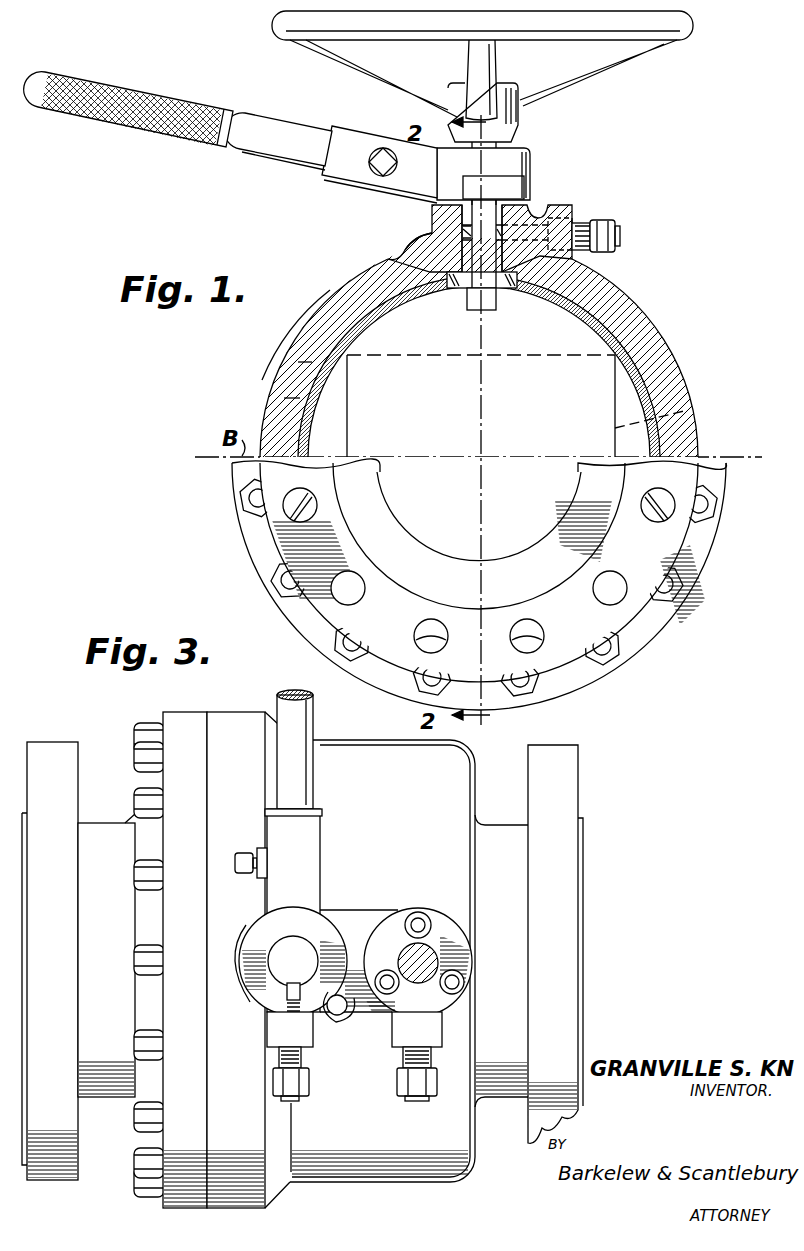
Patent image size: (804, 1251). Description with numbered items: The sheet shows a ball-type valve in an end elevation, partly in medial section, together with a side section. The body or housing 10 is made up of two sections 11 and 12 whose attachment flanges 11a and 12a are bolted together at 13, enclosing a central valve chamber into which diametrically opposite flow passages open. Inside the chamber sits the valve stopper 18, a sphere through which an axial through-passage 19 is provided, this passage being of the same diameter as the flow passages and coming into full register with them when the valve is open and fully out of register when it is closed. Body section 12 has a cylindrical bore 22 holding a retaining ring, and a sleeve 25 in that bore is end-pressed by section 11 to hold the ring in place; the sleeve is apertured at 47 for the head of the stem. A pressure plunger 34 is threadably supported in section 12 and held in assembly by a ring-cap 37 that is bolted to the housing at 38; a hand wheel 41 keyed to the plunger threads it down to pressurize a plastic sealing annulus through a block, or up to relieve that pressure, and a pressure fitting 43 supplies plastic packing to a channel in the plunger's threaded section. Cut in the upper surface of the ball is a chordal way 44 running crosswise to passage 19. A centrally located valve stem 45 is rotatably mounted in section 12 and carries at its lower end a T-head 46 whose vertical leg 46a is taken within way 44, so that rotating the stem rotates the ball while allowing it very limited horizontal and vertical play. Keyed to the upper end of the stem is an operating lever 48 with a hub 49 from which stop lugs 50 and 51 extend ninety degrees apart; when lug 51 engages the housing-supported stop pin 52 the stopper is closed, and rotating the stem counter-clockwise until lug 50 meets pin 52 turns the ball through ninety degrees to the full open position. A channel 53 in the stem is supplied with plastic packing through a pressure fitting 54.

In FIG. 1, the body or housing 10 is at (477, 347).
In FIG. 3, the body or housing 10 is at (319, 946).
In FIG. 3, the section 11 is at (126, 823).
In FIG. 1, the attachment flange 11a is at (481, 583).
In FIG. 3, the attachment flange 11a is at (79, 742).
In FIG. 1, the section 12 is at (323, 321).
In FIG. 3, the section 12 is at (433, 1184).
In FIG. 3, the attachment flange 12a is at (572, 749).
In FIG. 1, the bolts 13 is at (683, 597).
In FIG. 3, the bolts 13 is at (161, 723).
In FIG. 1, the valve stopper 18 is at (608, 337).
In FIG. 1, the axial through-passage 19 is at (685, 412).
In FIG. 1, the cylindrical bore 22 is at (283, 398).
In FIG. 1, the sleeve 25 is at (299, 362).
In FIG. 3, the pressure plunger 34 is at (423, 945).
In FIG. 3, the ring-cap 37 is at (418, 935).
In FIG. 3, the bolts 38 is at (418, 912).
In FIG. 1, the hand wheel 41 is at (694, 27).
In FIG. 3, the pressure fitting 43 is at (401, 1047).
In FIG. 1, the chordal way 44 is at (481, 311).
In FIG. 1, the valve stem 45 is at (495, 228).
In FIG. 3, the valve stem 45 is at (301, 955).
In FIG. 1, the T-head 46 is at (465, 308).
In FIG. 1, the vertical leg 46a is at (491, 300).
In FIG. 1, the aperture 47 is at (411, 256).
In FIG. 1, the operating lever 48 is at (305, 158).
In FIG. 3, the operating lever 48 is at (313, 793).
In FIG. 1, the hub 49 is at (531, 167).
In FIG. 3, the hub 49 is at (306, 924).
In FIG. 3, the stop lug 50 is at (244, 1001).
In FIG. 3, the stop lug 51 is at (348, 1016).
In FIG. 3, the stop pin 52 is at (337, 1012).
In FIG. 1, the channel 53 is at (461, 232).
In FIG. 1, the pressure fitting 54 is at (591, 223).
In FIG. 3, the pressure fitting 54 is at (279, 1050).